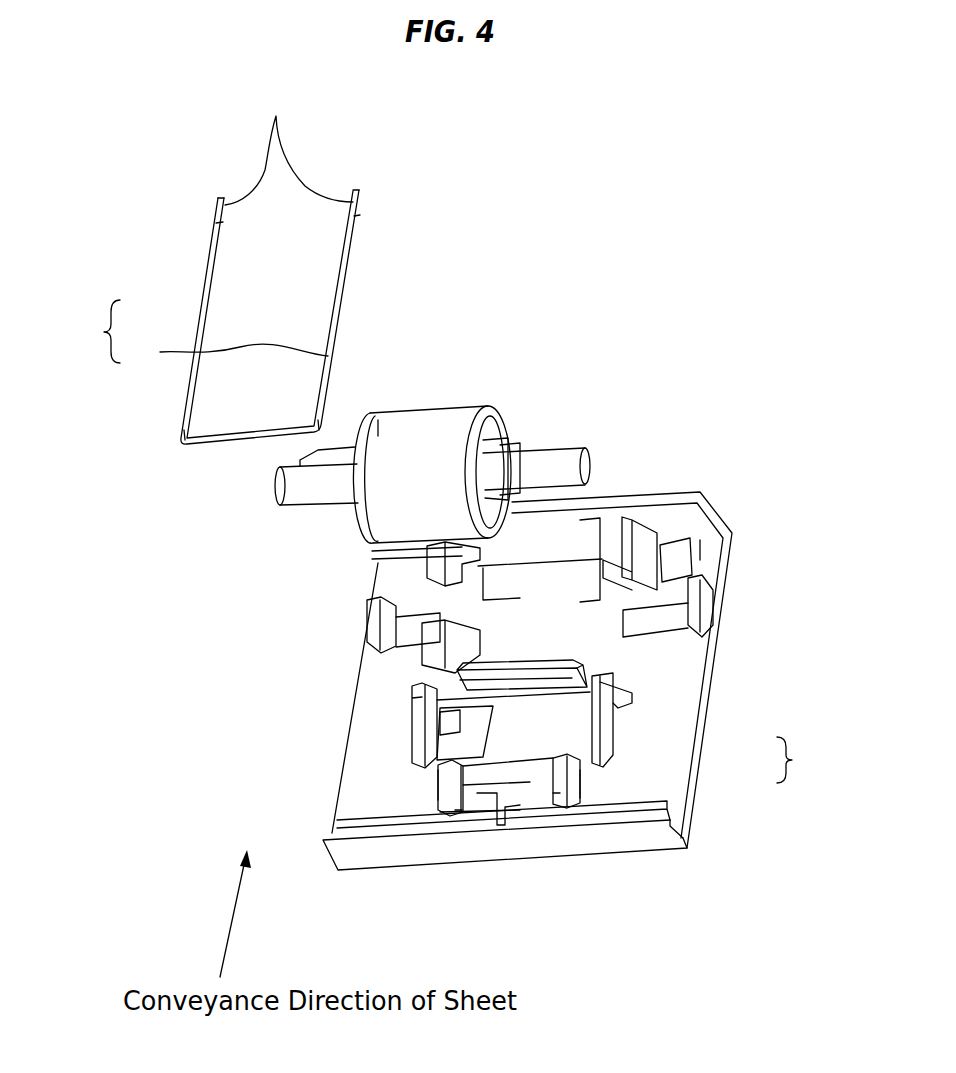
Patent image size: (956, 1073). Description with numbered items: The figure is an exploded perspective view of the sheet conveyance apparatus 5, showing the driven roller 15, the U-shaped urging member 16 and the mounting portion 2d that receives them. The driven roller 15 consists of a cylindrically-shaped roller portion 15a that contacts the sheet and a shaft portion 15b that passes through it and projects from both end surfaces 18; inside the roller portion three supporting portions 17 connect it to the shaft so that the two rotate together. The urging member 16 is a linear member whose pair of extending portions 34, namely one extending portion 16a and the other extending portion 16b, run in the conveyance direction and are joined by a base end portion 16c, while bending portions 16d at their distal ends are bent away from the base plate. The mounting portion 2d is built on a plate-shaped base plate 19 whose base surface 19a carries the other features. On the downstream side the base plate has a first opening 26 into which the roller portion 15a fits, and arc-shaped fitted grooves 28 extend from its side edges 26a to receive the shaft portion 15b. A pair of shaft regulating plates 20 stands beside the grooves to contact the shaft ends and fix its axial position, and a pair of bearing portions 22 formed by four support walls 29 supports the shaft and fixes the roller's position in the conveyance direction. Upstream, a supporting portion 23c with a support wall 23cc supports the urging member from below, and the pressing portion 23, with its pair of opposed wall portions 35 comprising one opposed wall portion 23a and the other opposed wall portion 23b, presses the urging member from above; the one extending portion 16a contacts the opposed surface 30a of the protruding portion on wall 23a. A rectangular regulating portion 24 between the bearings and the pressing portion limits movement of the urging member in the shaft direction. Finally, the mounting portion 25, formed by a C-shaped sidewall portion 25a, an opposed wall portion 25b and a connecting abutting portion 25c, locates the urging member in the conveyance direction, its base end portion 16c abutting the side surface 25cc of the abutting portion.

The sheet conveyance apparatus 5 is at (617, 330).
The driven roller 15 is at (432, 452).
The roller portion 15a is at (385, 427).
The shaft portion 15b is at (300, 487).
The urging member 16 is at (258, 308).
The one extending portion 16a is at (203, 322).
The other extending portion 16b is at (224, 352).
The base end portion 16c is at (197, 448).
The bending portion 16d is at (289, 148).
The supporting portion 17 is at (510, 447).
The end surface 18 is at (350, 450).
The base plate 19 is at (698, 673).
The base surface 19a is at (707, 560).
The shaft regulating plate 20 is at (707, 603).
The bearing portion 22 is at (668, 567).
The pressing portion 23 is at (553, 803).
The one opposed wall portion 23a is at (580, 760).
The other opposed wall portion 23b is at (600, 728).
The supporting portion 23c is at (493, 755).
The support wall 23cc is at (517, 807).
The regulating portion 24 is at (538, 663).
The mounting portion 25 is at (454, 844).
The sidewall portion 25a is at (437, 787).
The opposed wall portion 25b is at (570, 777).
The abutting portion 25c is at (555, 797).
The side surface 25cc is at (460, 810).
The first opening 26 is at (587, 563).
The side edge 26a is at (517, 597).
The fitted groove 28 is at (662, 622).
The support wall 29 is at (645, 540).
The opposed surface 30a is at (443, 750).
The pair of extending portions 34 is at (98, 331).
The pair of opposed wall portions 35 is at (798, 760).
The mounting portion 2d is at (697, 788).